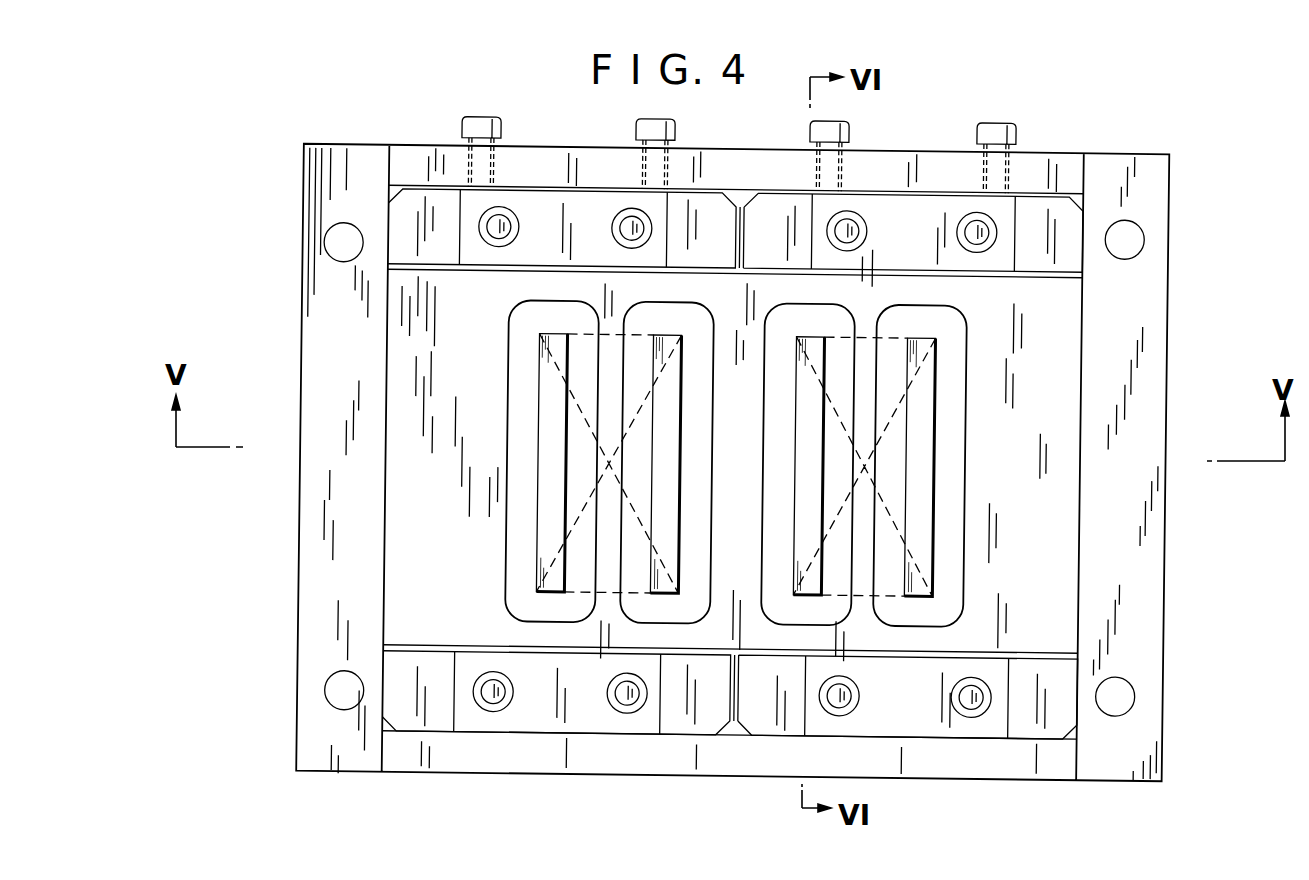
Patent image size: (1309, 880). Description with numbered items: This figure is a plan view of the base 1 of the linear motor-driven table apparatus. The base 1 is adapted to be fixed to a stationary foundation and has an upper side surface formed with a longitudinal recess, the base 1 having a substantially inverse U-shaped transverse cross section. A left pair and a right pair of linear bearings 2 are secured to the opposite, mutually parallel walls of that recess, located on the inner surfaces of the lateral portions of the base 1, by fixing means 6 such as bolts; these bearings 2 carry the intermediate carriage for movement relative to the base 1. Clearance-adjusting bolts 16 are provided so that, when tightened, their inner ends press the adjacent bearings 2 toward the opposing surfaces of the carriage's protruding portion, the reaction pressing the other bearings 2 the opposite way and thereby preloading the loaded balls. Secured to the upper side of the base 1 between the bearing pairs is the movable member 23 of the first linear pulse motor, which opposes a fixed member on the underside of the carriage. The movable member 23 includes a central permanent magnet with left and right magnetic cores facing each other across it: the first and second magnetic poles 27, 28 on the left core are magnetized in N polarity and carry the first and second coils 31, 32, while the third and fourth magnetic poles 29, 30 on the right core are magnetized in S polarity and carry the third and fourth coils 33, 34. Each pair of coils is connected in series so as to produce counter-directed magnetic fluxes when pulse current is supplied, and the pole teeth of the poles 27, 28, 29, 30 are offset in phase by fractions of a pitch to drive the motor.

The base 1 is at (1182, 316).
The linear bearing 2 is at (587, 197).
The fixing means 6 is at (495, 249).
The clearance-adjusting bolt 16 is at (499, 126).
The movable member 23 is at (1010, 548).
The first magnetic pole 27 is at (537, 432).
The second magnetic pole 28 is at (681, 558).
The third magnetic pole 29 is at (797, 432).
The fourth magnetic pole 30 is at (936, 425).
The first coil 31 is at (507, 368).
The second coil 32 is at (713, 335).
The third coil 33 is at (765, 382).
The fourth coil 34 is at (965, 382).